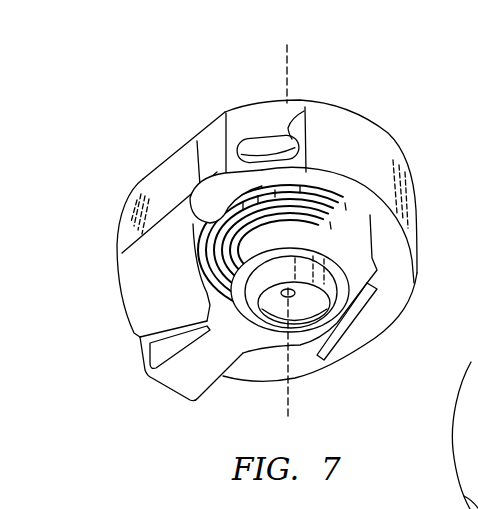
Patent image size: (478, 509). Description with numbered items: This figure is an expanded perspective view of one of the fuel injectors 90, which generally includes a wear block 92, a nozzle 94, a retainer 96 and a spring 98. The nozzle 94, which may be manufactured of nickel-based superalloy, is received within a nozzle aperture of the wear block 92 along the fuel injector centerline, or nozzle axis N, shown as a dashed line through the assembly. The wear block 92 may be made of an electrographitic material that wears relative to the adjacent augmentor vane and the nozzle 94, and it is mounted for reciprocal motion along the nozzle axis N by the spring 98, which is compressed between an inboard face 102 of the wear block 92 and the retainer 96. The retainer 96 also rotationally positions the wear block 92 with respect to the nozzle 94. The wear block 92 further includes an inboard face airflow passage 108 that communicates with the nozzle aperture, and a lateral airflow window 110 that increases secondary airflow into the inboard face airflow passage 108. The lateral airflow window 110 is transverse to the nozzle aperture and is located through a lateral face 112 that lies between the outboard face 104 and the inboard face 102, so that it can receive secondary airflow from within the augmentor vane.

The fuel injector 90 is at (117, 101).
The wear block 92 is at (372, 138).
The nozzle 94 is at (299, 371).
The retainer 96 is at (187, 380).
The spring 98 is at (343, 195).
The inboard face 102 is at (128, 327).
The outboard face 104 is at (184, 148).
The inboard face airflow passage 108 is at (327, 190).
The lateral airflow window 110 is at (305, 107).
The lateral face 112 is at (232, 122).
The nozzle axis N is at (285, 52).